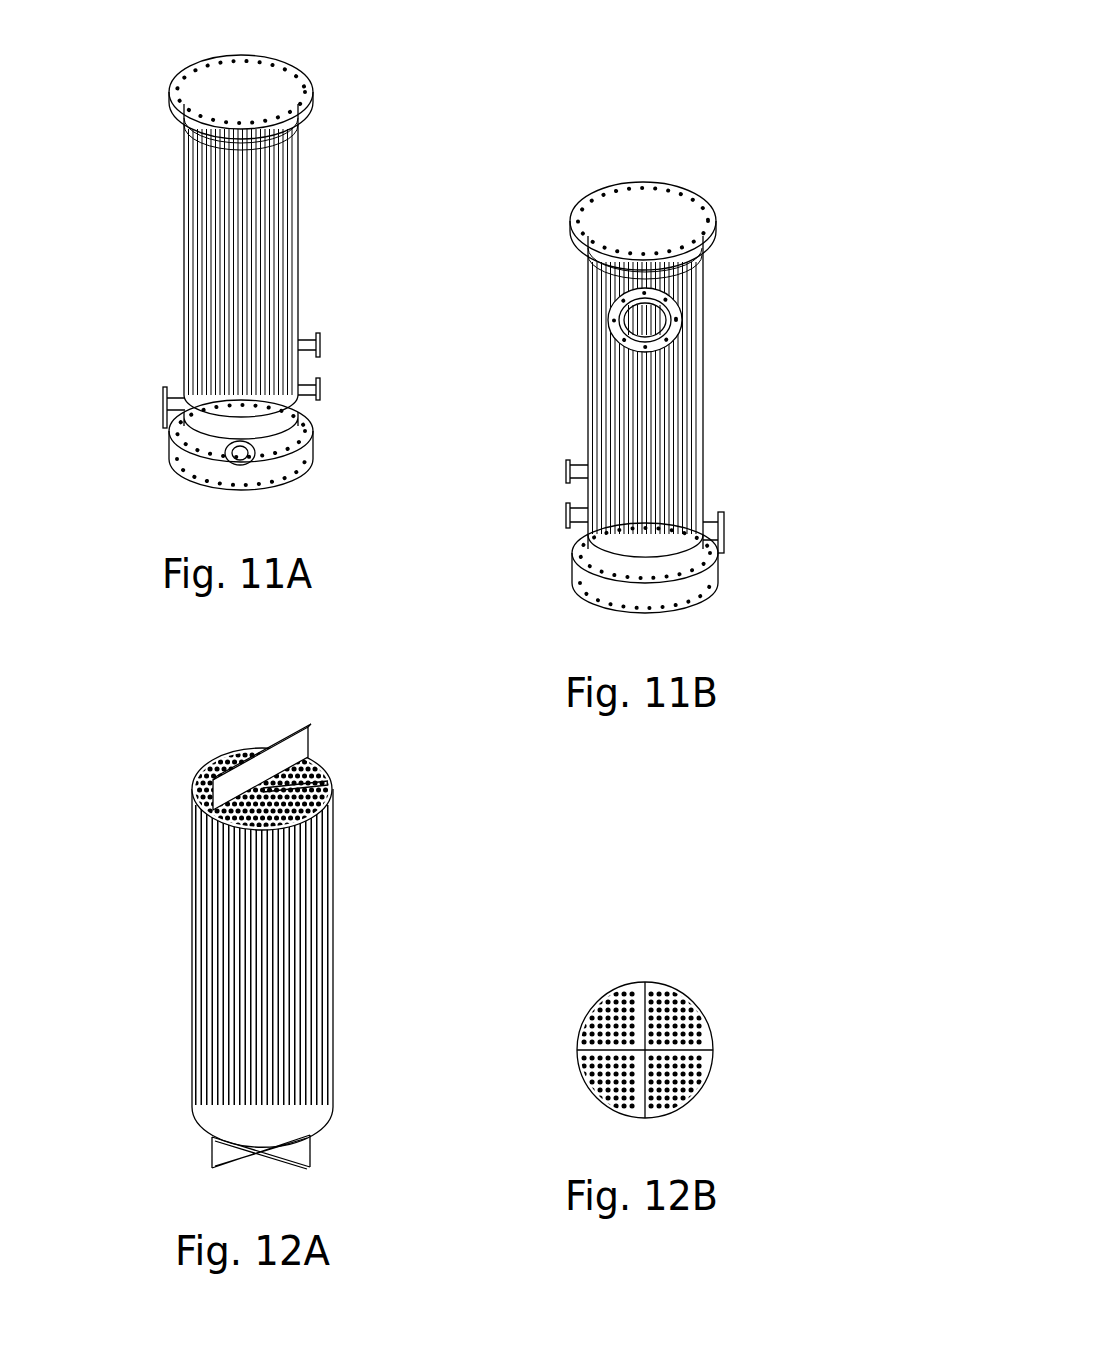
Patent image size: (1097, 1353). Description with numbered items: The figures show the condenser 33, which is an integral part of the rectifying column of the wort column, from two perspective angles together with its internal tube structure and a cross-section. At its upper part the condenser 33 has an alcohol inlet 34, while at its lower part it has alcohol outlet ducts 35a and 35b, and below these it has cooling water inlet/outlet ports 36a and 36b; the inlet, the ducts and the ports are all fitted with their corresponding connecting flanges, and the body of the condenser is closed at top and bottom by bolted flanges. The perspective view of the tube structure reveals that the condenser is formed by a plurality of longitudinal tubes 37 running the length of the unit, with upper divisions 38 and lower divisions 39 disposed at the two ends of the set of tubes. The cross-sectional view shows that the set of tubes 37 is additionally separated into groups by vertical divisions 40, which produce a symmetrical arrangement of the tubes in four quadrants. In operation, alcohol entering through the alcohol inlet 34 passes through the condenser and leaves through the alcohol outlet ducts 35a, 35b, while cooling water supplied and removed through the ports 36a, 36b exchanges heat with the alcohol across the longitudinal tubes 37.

In FIG. 11A, the condenser 33 is at (358, 145).
In FIG. 11B, the condenser 33 is at (722, 157).
In FIG. 11B, the alcohol inlet 34 is at (668, 305).
In FIG. 11A, the alcohol outlet duct 35a is at (325, 343).
In FIG. 11B, the alcohol outlet duct 35a is at (560, 470).
In FIG. 11A, the alcohol outlet duct 35b is at (325, 387).
In FIG. 11B, the alcohol outlet duct 35b is at (560, 513).
In FIG. 11A, the cooling water inlet/outlet port 36a is at (159, 398).
In FIG. 11B, the cooling water inlet/outlet port 36a is at (730, 530).
In FIG. 11A, the cooling water inlet/outlet port 36b is at (225, 455).
In FIG. 11A, the longitudinal tubes 37 is at (283, 262).
In FIG. 11B, the longitudinal tubes 37 is at (668, 407).
In FIG. 12A, the longitudinal tubes 37 is at (305, 893).
In FIG. 12B, the longitudinal tubes 37 is at (605, 1005).
In FIG. 12A, the upper divisions 38 is at (240, 780).
In FIG. 12A, the lower divisions 39 is at (212, 1157).
In FIG. 12B, the vertical divisions 40 is at (650, 993).